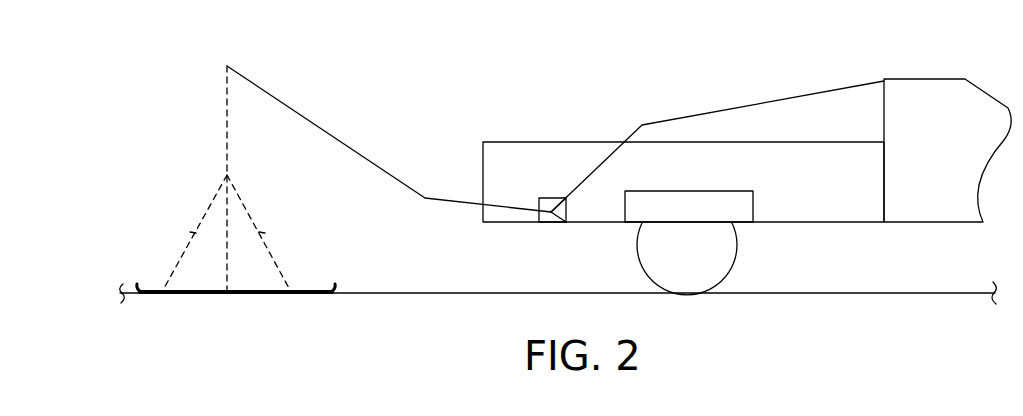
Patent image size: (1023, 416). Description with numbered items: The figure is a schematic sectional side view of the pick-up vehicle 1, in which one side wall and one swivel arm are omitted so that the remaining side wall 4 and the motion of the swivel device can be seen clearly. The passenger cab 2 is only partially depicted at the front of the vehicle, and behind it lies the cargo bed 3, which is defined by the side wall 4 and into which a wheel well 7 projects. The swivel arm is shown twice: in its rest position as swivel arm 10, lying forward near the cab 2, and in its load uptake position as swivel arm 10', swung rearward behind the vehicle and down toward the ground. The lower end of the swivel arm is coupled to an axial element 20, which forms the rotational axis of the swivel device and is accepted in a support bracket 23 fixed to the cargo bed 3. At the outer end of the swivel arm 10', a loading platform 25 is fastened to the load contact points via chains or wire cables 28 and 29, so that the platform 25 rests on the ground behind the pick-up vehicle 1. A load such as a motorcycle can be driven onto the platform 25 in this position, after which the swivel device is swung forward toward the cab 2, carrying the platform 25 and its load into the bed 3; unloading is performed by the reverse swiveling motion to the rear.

The pick-up vehicle 1 is at (898, 70).
The passenger cab 2 is at (950, 86).
The cargo bed 3 is at (790, 222).
The side wall 4 is at (836, 194).
The wheel well 7 is at (671, 191).
The swivel arm 10 is at (717, 129).
The swivel arm in load position 10' is at (389, 129).
The axial element (swivel axis) 20 is at (552, 222).
The support bracket 23 is at (551, 198).
The loading platform 25 is at (268, 290).
The chain or wire cable 28 is at (226, 157).
The chain or wire cable 29 is at (193, 232).